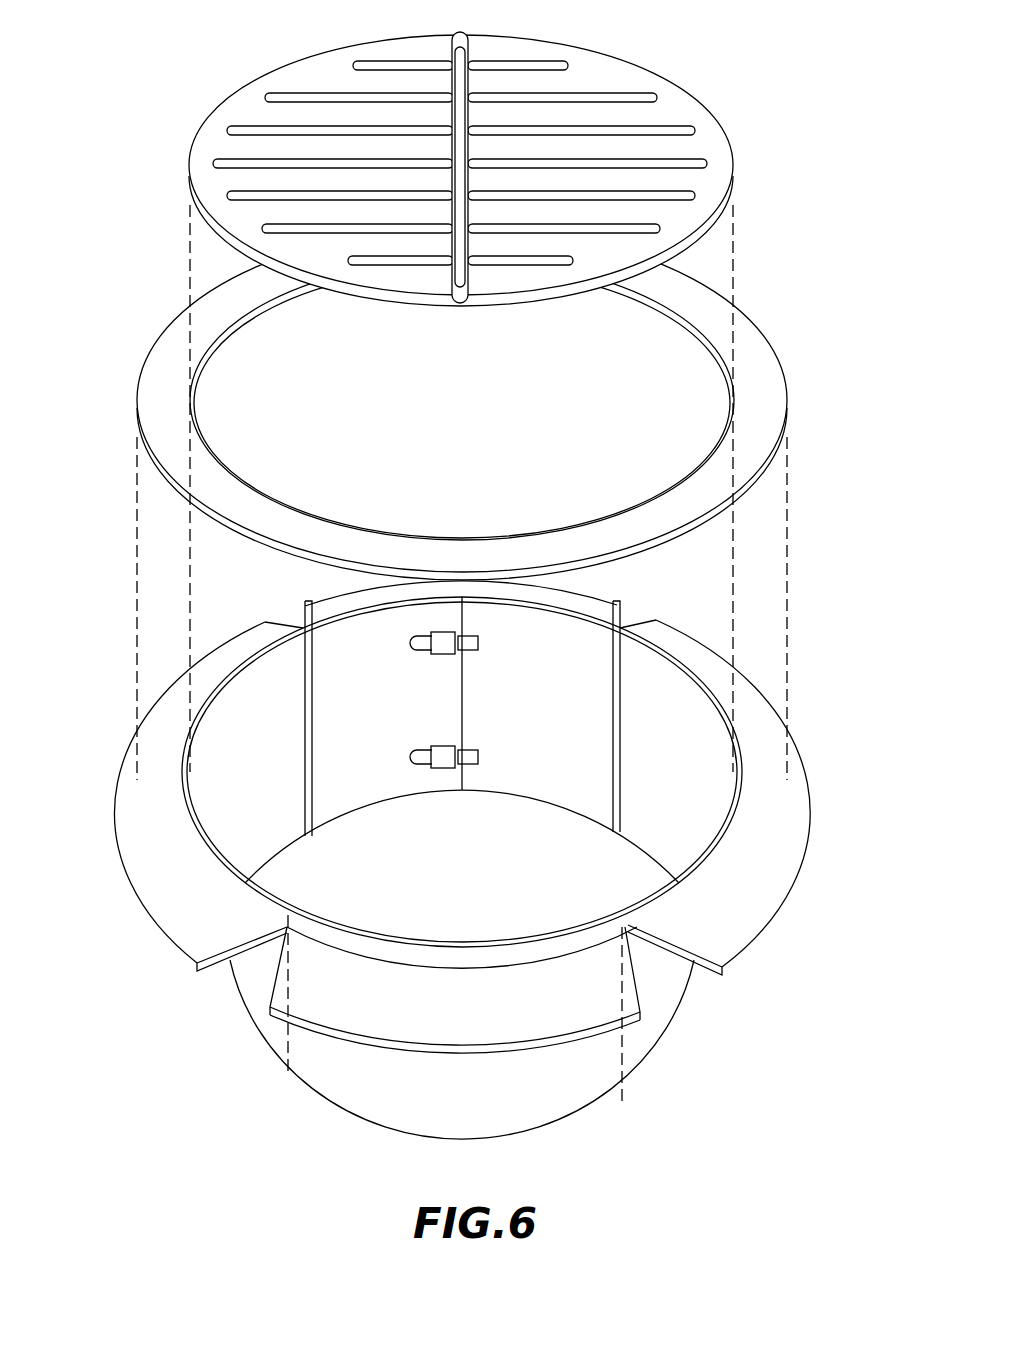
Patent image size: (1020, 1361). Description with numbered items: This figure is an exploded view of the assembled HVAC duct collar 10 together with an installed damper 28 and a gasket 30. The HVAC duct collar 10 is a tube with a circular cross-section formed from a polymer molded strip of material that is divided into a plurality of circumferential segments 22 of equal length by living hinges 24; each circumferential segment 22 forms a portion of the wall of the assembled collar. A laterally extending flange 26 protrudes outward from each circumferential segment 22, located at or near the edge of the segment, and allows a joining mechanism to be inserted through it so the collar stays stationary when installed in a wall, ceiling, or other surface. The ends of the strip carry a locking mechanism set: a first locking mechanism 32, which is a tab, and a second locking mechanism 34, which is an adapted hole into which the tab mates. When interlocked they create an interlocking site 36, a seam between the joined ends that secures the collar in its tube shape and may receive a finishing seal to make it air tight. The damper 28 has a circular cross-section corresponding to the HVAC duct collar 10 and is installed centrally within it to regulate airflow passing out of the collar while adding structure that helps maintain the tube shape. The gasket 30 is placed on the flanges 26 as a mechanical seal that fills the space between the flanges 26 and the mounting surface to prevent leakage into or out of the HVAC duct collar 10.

The HVAC duct collar 10 is at (835, 211).
The circumferential segment 22 is at (565, 643).
The living hinge 24 is at (305, 838).
The laterally extending flange 26 is at (323, 610).
The damper 28 is at (613, 72).
The gasket 30 is at (156, 345).
The first locking mechanism 32 is at (422, 652).
The second locking mechanism 34 is at (445, 652).
The interlocking site 36 is at (462, 673).